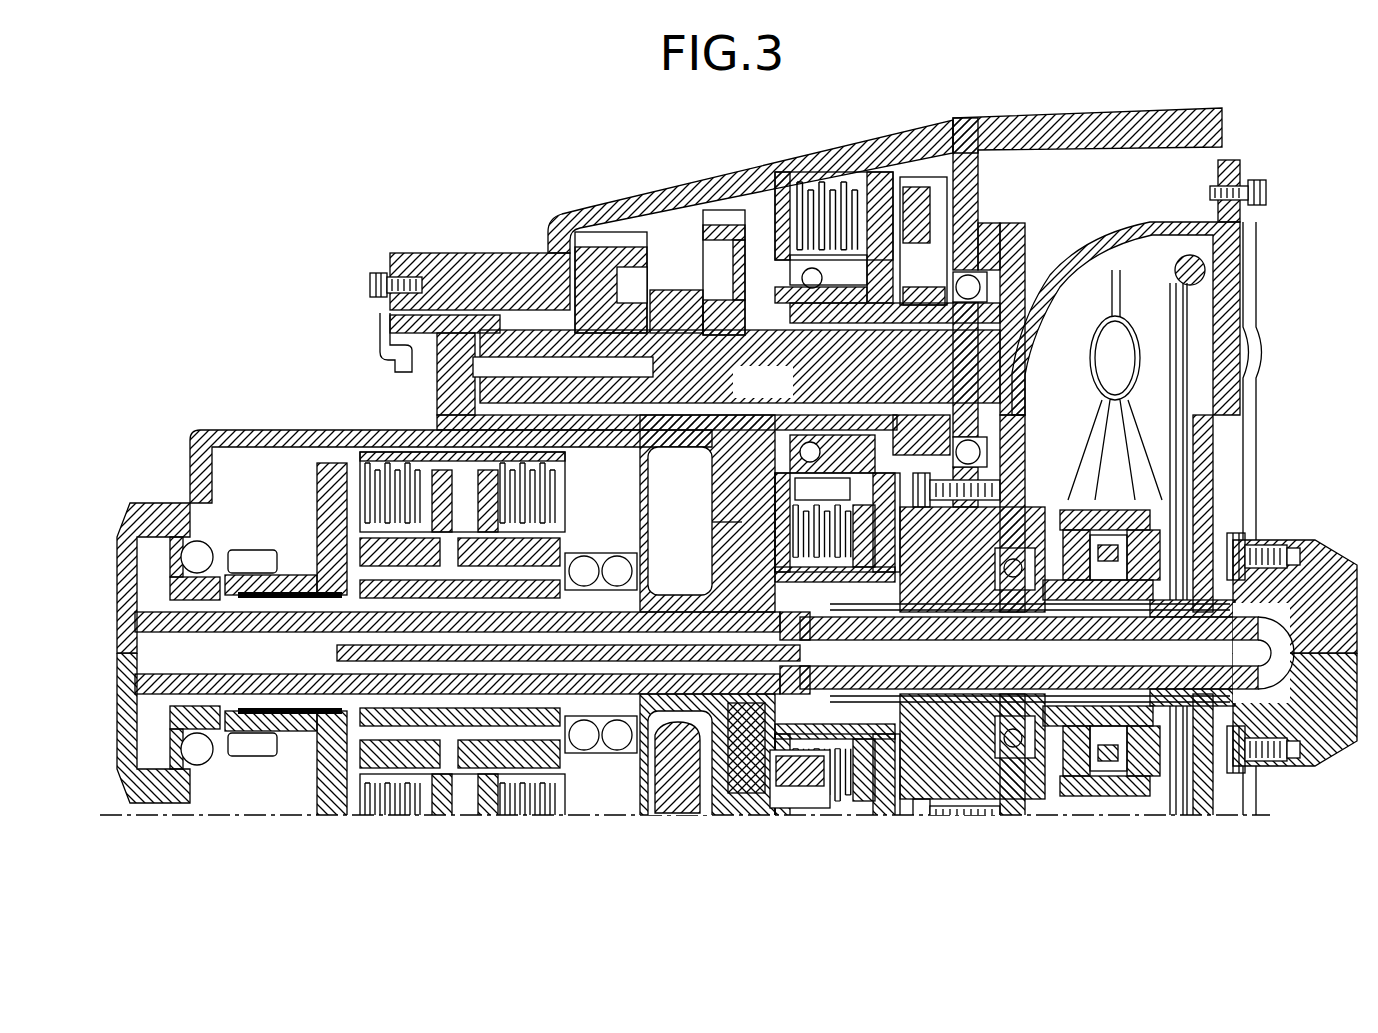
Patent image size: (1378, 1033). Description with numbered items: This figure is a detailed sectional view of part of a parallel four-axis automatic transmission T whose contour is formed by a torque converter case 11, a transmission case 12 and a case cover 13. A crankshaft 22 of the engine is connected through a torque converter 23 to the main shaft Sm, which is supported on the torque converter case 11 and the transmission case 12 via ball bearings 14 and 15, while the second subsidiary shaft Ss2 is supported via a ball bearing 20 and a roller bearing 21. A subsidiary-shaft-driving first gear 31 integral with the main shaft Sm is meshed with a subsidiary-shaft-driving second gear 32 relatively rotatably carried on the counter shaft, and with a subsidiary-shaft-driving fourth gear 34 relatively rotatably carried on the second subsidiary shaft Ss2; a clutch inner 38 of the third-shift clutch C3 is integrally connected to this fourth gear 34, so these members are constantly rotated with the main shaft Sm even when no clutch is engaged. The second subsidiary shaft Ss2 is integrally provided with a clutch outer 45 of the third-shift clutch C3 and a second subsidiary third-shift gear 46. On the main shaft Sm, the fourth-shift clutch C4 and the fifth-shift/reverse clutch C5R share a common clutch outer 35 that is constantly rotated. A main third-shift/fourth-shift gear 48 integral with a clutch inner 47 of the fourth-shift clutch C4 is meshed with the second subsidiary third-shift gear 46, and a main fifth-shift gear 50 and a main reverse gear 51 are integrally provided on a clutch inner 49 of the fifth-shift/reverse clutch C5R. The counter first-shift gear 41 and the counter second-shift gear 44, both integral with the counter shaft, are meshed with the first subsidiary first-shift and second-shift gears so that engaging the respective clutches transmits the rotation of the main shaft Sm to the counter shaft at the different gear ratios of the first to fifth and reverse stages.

The torque converter case 11 is at (1047, 130).
The transmission case 12 is at (612, 186).
The case cover 13 is at (142, 507).
The ball bearing 14 is at (1012, 527).
The ball bearing 15 is at (197, 553).
The ball bearing 20 is at (973, 283).
The roller bearing 21 is at (530, 318).
The crankshaft 22 is at (1337, 547).
The torque converter 23 is at (1116, 237).
The subsidiary-shaft-driving first gear 31 is at (708, 530).
The subsidiary-shaft-driving second gear 32 is at (745, 815).
The subsidiary-shaft-driving fourth gear 34 is at (727, 213).
The common clutch outer 35 is at (445, 415).
The clutch inner 38 is at (897, 262).
The counter first-shift gear 41 is at (680, 735).
The counter second-shift gear 44 is at (818, 765).
The clutch outer 45 is at (818, 170).
The second subsidiary third-shift gear 46 is at (612, 235).
The clutch inner 47 is at (548, 591).
The main third-shift/fourth-shift gear 48 is at (712, 522).
The clutch inner 49 is at (337, 646).
The main fifth-shift gear 50 is at (327, 468).
The main reverse gear 51 is at (245, 552).
The third-shift clutch C3 is at (838, 173).
The fourth-shift clutch C4 is at (558, 492).
The fifth-shift/reverse clutch C5R is at (411, 446).
The automatic transmission T is at (369, 340).
The second subsidiary shaft Ss2 is at (780, 397).
The main shaft Sm is at (1025, 668).